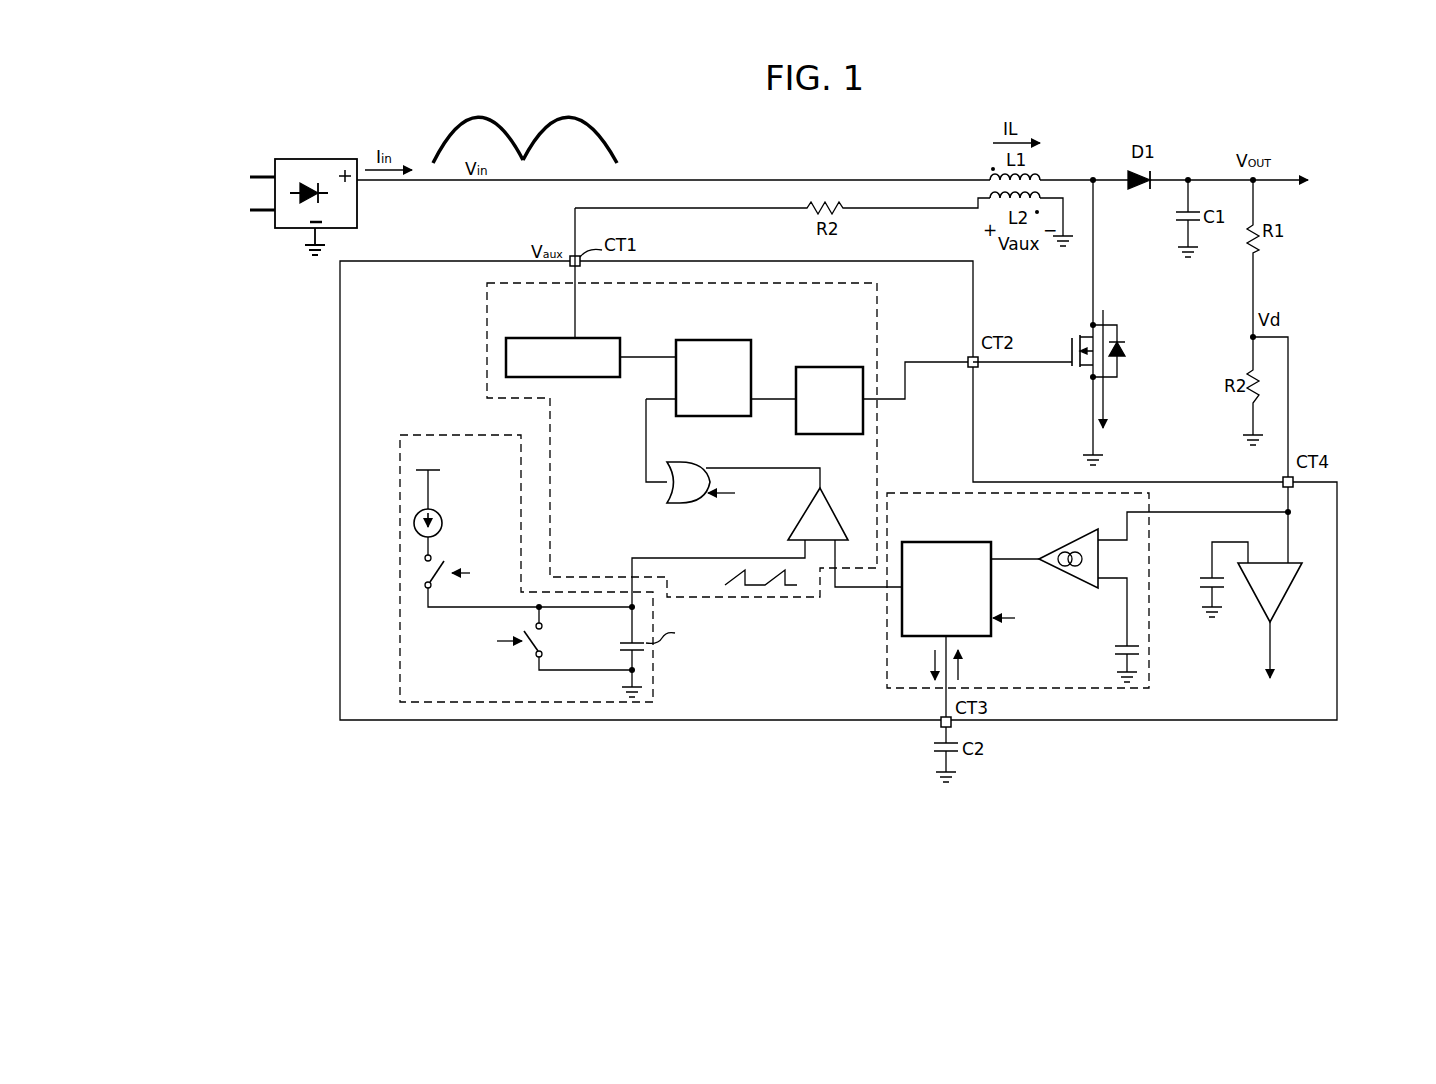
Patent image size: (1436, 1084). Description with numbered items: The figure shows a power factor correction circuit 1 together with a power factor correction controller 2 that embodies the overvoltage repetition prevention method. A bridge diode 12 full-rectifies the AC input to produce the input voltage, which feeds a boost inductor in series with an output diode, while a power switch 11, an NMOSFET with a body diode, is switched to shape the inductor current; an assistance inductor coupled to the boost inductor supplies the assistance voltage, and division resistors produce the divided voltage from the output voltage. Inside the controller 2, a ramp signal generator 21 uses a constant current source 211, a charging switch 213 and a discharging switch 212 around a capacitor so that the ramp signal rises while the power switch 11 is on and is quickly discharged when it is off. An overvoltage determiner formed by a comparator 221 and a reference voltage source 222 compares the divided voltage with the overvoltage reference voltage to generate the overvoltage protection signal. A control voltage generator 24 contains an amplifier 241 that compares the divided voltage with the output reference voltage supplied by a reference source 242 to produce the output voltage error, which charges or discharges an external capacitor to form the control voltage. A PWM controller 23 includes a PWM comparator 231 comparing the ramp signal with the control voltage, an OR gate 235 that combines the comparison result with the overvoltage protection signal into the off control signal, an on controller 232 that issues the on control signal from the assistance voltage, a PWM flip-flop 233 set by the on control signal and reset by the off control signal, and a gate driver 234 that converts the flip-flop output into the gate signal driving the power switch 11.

The power factor correction circuit 1 is at (1168, 133).
The power factor correction controller 2 is at (551, 722).
The power switch 11 is at (1072, 368).
The bridge diode 12 is at (300, 159).
The ramp signal generator 21 is at (400, 645).
The PWM controller 23 is at (877, 462).
The control voltage generator 24 is at (1149, 663).
The constant current source 211 is at (442, 512).
The discharging switch 212 is at (543, 644).
The charging switch 213 is at (422, 570).
The comparator 221 is at (1283, 597).
The reference voltage source 222 is at (1224, 582).
The PWM comparator 231 is at (833, 503).
The on controller 232 is at (594, 378).
The PWM flip-flop 233 is at (712, 340).
The gate driver 234 is at (828, 367).
The OR gate 235 is at (667, 498).
The hysteresis comparator 241 is at (1073, 536).
The reference voltage capacitor 242 is at (1118, 643).